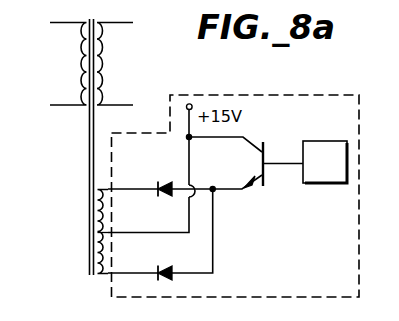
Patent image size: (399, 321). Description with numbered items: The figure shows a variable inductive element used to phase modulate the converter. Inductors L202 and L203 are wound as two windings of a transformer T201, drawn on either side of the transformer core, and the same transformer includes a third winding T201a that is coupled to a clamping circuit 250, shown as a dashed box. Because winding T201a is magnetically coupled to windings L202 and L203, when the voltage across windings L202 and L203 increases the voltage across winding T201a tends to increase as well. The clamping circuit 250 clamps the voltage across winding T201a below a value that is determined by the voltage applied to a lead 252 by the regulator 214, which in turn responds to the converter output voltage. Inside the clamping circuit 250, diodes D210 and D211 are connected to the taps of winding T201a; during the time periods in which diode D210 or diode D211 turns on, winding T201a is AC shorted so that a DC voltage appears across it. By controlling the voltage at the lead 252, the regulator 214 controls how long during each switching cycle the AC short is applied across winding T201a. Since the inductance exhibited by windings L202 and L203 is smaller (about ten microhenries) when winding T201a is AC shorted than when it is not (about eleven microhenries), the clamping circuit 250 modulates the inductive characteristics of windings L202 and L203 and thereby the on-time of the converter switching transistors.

The inductor L202 is at (79, 74).
The inductor L203 is at (106, 71).
The transformer T201 is at (89, 175).
The third winding T201a is at (100, 277).
The diode D210 is at (170, 183).
The diode D211 is at (170, 268).
The clamping circuit 250 is at (273, 93).
The lead 252 is at (282, 162).
The regulator 214 is at (320, 187).